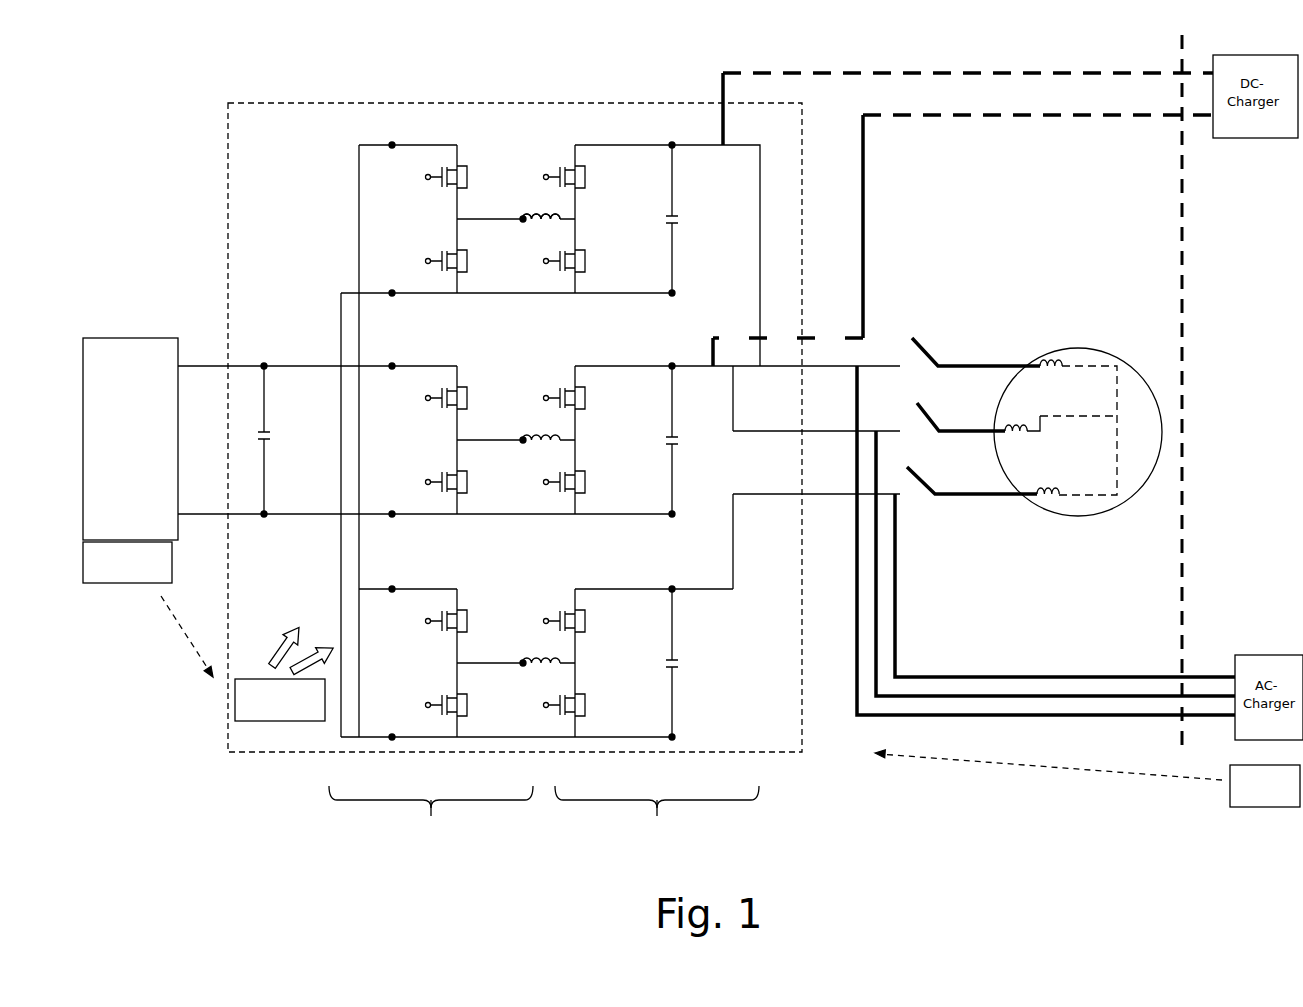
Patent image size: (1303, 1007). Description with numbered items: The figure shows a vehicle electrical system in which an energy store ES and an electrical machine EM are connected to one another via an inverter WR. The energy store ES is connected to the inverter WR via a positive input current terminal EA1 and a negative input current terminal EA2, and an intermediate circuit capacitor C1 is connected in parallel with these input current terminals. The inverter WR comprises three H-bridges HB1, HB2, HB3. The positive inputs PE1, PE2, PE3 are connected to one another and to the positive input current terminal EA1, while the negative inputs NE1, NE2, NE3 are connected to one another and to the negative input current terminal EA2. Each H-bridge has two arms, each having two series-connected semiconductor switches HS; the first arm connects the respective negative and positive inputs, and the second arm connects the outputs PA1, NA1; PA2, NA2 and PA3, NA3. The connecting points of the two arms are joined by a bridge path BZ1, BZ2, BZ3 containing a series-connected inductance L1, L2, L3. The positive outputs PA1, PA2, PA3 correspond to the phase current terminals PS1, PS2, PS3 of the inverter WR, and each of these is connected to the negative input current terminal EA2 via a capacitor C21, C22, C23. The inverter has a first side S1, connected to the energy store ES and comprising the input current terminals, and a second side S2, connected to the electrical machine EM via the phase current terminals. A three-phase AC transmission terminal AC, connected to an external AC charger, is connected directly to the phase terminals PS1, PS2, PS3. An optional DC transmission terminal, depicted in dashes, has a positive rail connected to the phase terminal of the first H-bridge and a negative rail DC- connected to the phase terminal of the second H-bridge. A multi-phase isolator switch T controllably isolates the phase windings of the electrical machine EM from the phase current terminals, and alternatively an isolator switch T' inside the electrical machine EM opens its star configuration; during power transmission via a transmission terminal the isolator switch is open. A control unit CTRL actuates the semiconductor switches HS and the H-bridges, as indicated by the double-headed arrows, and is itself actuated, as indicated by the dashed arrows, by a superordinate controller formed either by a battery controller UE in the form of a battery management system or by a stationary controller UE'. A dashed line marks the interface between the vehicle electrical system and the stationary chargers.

The inverter WR is at (515, 427).
The energy store ES is at (143, 450).
The controller UE is at (148, 609).
The positive input current terminal EA1 is at (228, 364).
The negative input current terminal EA2 is at (228, 516).
The intermediate circuit capacitor C1 is at (282, 440).
The H-bridge HB1 is at (550, 143).
The H-bridge HB2 is at (550, 364).
The H-bridge HB3 is at (550, 587).
The positive input PE1 is at (393, 134).
The positive input PE2 is at (393, 355).
The positive input PE3 is at (393, 578).
The negative input NE1 is at (395, 282).
The negative input NE2 is at (395, 503).
The negative input NE3 is at (395, 726).
The positive output PA1 is at (668, 134).
The positive output PA2 is at (668, 355).
The positive output PA3 is at (668, 578).
The negative output NA1 is at (672, 282).
The negative output NA2 is at (672, 503).
The negative output NA3 is at (672, 726).
The bridge path BZ1 is at (522, 216).
The bridge path BZ2 is at (522, 437).
The bridge path BZ3 is at (522, 660).
The inductance L1 is at (545, 228).
The inductance L2 is at (545, 449).
The inductance L3 is at (545, 672).
The semiconductor switch HS is at (531, 441).
The capacitor C21 is at (676, 223).
The capacitor C22 is at (676, 444).
The capacitor C23 is at (676, 667).
The first side S1 is at (431, 821).
The second side S2 is at (657, 821).
The control unit CTRL is at (286, 671).
The negative rail DC- is at (1180, 118).
The AC transmission terminal AC is at (1158, 668).
The controller UE' is at (1087, 778).
The phase current terminal PS1 is at (840, 365).
The phase current terminal PS2 is at (840, 430).
The phase current terminal PS3 is at (840, 493).
The isolator switch T is at (961, 307).
The isolator switch T' is at (1147, 417).
The electrical machine EM is at (1094, 445).